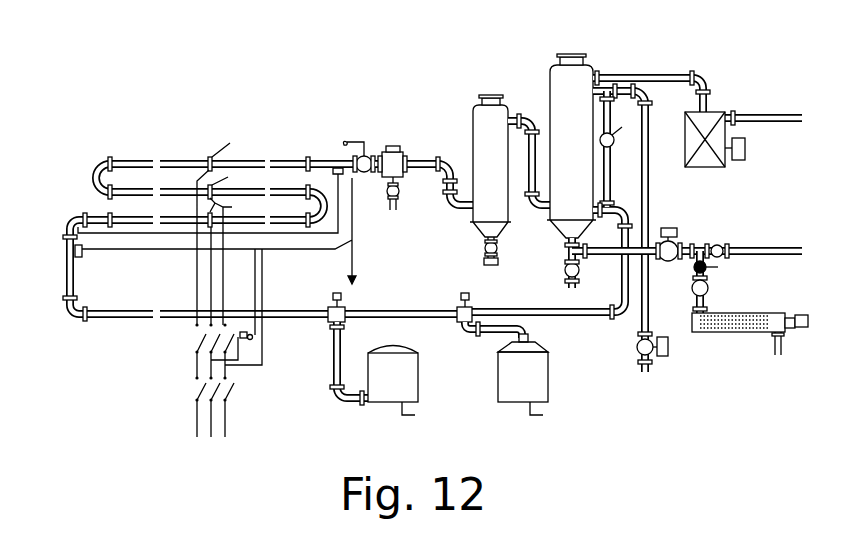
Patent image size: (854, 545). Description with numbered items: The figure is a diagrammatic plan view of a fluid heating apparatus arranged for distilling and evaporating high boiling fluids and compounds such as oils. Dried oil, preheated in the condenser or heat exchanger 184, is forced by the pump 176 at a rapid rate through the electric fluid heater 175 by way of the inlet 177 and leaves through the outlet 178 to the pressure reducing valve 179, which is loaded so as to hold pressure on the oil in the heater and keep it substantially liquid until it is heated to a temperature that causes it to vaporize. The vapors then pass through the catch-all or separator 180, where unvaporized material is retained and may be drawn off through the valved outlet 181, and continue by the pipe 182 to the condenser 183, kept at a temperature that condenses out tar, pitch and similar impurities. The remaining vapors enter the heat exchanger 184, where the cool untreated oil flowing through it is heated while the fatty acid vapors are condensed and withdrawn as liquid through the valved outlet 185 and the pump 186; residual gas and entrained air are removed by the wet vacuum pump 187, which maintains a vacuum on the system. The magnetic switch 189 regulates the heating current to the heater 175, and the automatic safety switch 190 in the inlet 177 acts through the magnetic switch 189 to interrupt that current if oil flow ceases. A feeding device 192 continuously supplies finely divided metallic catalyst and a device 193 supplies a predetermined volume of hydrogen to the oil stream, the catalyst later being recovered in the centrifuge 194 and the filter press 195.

The electric fluid heater 175 is at (165, 160).
The pump 176 is at (638, 353).
The inlet 177 is at (97, 215).
The outlet 178 is at (310, 162).
The pressure reducing valve 179 is at (365, 150).
The catch-all or separator 180 is at (396, 149).
The valved outlet 181 is at (400, 196).
The pipe 182 is at (426, 160).
The condenser 183 is at (484, 107).
The condenser or heat exchanger 184 is at (596, 84).
The valved outlet 185 is at (568, 265).
The pump 186 is at (680, 241).
The wet vacuum pump 187 is at (716, 113).
The magnetic switch 189 is at (200, 346).
The automatic safety switch 190 is at (82, 258).
The feeding device 192 is at (345, 306).
The hydrogen supplying device 193 is at (474, 307).
The centrifuge 194 is at (709, 288).
The filter press 195 is at (745, 314).